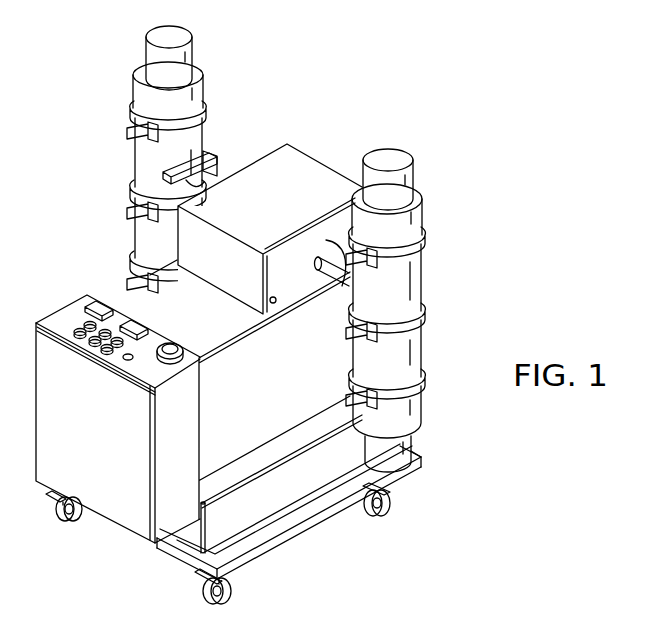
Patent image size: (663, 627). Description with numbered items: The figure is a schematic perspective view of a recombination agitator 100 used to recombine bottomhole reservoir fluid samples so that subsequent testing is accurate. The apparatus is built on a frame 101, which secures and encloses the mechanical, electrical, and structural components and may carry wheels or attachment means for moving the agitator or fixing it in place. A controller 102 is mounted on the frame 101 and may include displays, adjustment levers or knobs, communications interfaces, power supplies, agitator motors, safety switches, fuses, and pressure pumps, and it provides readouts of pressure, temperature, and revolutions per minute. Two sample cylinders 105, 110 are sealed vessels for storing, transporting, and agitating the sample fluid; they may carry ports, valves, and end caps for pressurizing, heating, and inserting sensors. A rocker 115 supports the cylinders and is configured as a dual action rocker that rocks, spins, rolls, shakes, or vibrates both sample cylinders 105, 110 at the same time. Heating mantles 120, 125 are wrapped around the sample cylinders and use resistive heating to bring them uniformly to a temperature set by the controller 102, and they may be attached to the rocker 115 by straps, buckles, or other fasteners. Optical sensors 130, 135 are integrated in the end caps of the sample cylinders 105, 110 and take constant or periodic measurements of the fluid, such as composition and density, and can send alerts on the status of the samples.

The recombination agitator 100 is at (528, 203).
The frame 101 is at (301, 391).
The controller 102 is at (66, 313).
The sample cylinder 105 is at (146, 49).
The sample cylinder 110 is at (416, 176).
The rocker 115 is at (212, 154).
The heating mantle 120 is at (427, 279).
The heating mantle 125 is at (134, 158).
The optical sensor 130 is at (393, 148).
The optical sensor 135 is at (422, 443).